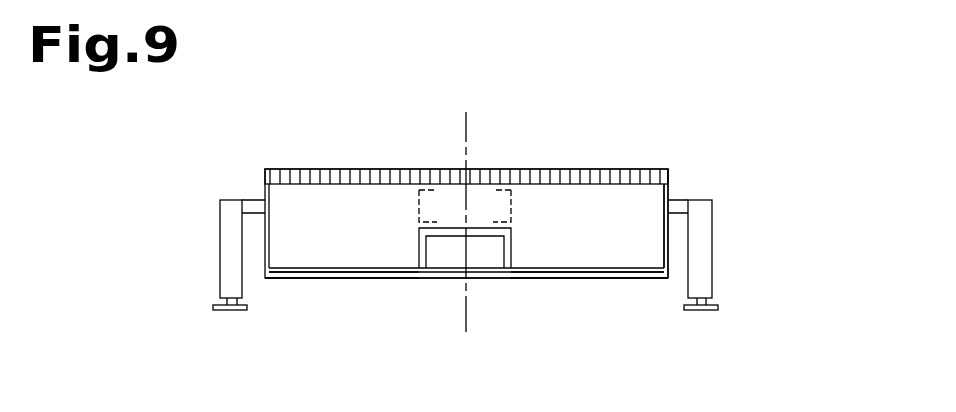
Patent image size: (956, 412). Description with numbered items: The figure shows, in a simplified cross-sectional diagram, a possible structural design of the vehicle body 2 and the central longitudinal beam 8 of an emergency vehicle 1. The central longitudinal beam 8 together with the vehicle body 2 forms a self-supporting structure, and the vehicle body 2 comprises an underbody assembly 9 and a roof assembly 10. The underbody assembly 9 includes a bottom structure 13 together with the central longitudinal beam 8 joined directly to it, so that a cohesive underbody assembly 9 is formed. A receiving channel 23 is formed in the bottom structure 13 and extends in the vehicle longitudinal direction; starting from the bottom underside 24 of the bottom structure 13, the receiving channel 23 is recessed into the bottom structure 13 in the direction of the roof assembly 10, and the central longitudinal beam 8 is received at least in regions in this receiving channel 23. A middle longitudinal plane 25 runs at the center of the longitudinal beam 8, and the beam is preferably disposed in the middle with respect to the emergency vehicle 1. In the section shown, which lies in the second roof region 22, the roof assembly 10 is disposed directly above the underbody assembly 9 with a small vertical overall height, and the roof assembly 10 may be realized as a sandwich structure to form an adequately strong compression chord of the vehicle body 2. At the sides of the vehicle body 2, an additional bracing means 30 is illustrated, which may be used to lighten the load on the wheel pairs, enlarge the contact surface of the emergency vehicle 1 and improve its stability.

The emergency vehicle 1 is at (622, 150).
The vehicle body 2 is at (675, 160).
The central longitudinal beam 8 is at (450, 252).
The underbody assembly 9 is at (580, 285).
The roof assembly 10 is at (550, 152).
The bottom structure 13 is at (552, 287).
The second roof region 22 is at (685, 182).
The receiving channel 23 is at (493, 264).
The bottom underside 24 is at (352, 280).
The middle longitudinal plane 25 is at (467, 152).
The bracing means 30 is at (237, 180).